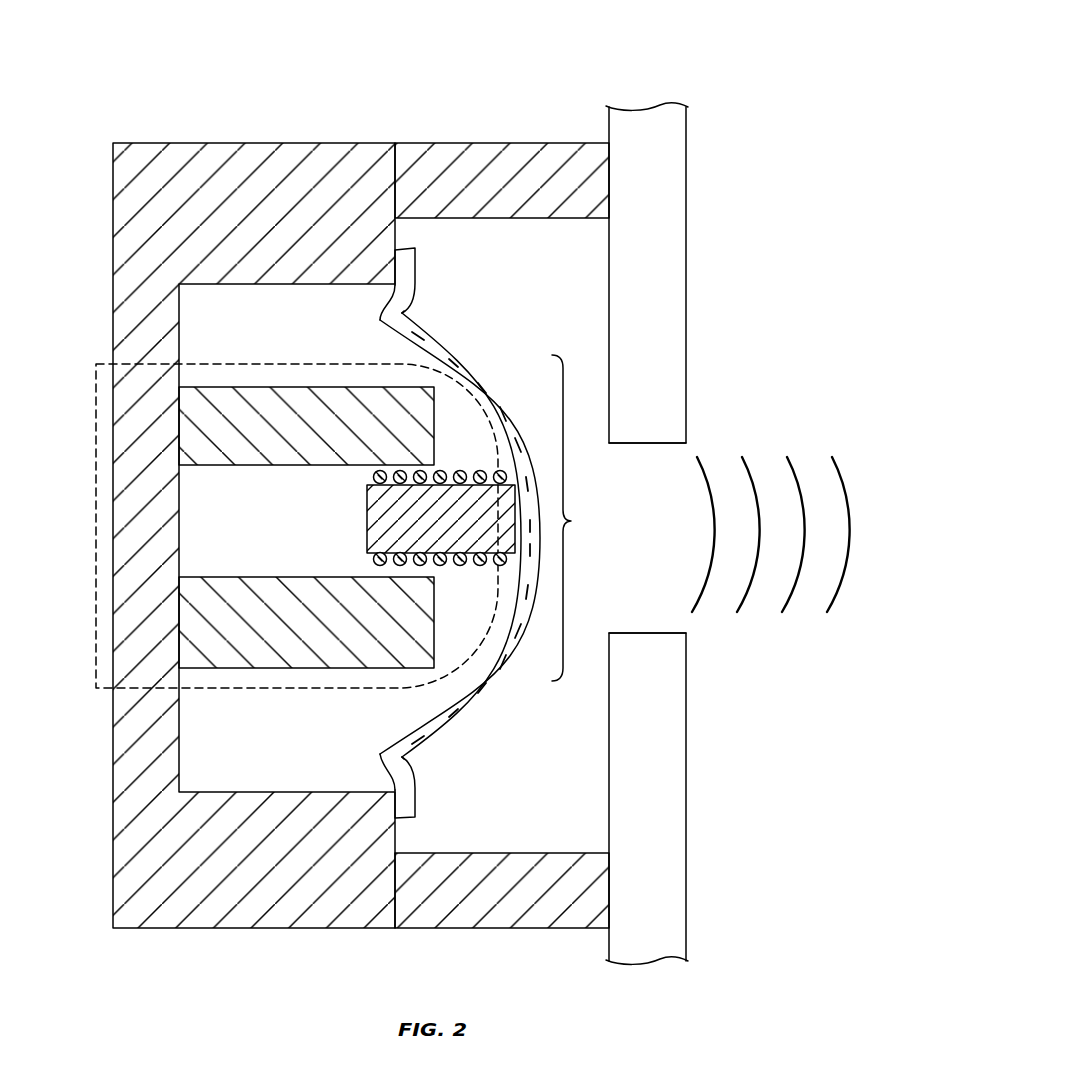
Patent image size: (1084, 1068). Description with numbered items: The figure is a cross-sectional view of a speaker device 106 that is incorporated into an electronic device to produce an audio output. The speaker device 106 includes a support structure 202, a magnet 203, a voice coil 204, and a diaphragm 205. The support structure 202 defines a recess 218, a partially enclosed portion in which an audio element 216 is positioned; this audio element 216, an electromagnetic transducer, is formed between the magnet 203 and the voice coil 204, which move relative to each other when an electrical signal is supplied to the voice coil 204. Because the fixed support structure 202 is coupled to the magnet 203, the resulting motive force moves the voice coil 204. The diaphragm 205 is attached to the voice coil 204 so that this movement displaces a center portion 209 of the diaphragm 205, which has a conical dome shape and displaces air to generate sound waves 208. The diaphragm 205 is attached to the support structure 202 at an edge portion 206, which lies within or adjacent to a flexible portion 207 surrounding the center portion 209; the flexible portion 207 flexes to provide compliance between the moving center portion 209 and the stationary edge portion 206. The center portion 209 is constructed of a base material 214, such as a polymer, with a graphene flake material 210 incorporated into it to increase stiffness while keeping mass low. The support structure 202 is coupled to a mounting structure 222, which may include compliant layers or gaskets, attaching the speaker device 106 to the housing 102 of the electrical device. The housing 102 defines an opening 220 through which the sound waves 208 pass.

The speaker device 106 is at (715, 62).
The housing 102 is at (686, 325).
The support structure 202 is at (270, 143).
The magnet 203 is at (267, 387).
The voice coil 204 is at (452, 562).
The diaphragm 205 is at (470, 532).
The edge portion 206 is at (416, 259).
The flexible portion 207 is at (403, 313).
The sound waves 208 is at (757, 646).
The center portion 209 is at (579, 518).
The graphene flake material 210 is at (466, 706).
The base material 214 is at (483, 690).
The audio element 216 is at (96, 505).
The recess 218 is at (243, 748).
The opening 220 is at (648, 443).
The mounting structure 222 is at (518, 143).